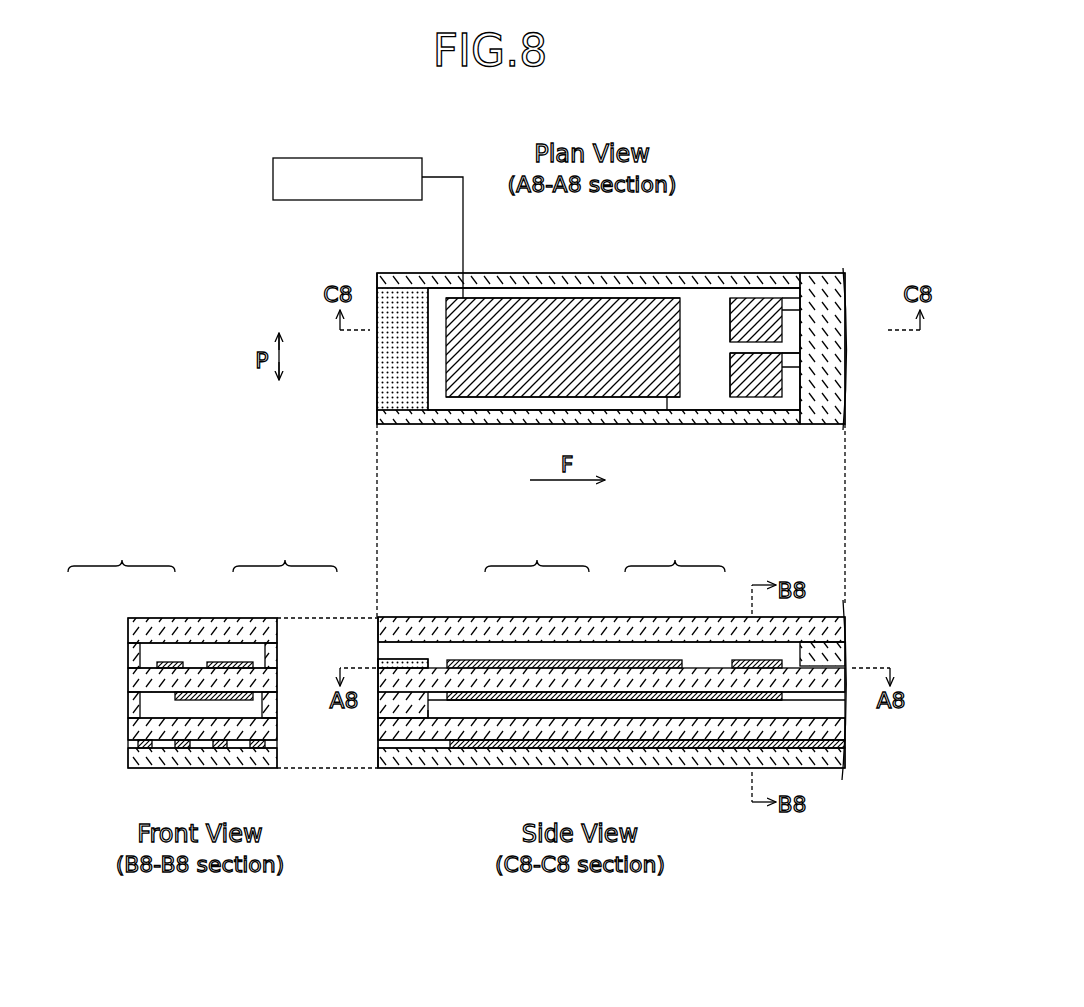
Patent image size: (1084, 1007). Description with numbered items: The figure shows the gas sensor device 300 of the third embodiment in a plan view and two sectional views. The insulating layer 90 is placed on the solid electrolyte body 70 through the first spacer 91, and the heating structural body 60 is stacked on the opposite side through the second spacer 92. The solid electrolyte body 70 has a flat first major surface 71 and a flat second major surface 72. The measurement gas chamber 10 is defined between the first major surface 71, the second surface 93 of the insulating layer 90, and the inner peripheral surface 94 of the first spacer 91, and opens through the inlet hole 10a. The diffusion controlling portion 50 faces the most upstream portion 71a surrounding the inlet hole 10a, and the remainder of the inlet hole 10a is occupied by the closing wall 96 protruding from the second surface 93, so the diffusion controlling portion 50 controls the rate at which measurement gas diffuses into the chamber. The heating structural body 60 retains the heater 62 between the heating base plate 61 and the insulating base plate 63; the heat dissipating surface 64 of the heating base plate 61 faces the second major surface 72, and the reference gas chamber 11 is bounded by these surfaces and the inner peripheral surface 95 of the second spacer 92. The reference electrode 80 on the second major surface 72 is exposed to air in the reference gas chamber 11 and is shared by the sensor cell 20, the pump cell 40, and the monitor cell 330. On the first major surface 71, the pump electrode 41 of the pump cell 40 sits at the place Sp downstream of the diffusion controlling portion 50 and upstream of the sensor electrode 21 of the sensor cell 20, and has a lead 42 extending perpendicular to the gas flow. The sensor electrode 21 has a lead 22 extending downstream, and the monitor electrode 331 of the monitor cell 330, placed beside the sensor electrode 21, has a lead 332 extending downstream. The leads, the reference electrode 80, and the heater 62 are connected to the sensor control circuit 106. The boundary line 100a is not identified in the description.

The sensor control circuit 106 is at (367, 158).
The gas sensor device 300 is at (302, 312).
The cover layer 100a is at (378, 276).
The diffusion controlling portion 50 is at (401, 292).
The pump electrode 41 is at (490, 298).
The place Sp is at (553, 297).
The inner peripheral surface 94 is at (600, 298).
The measurement gas chamber 10 is at (703, 292).
The sensor electrode 21 is at (750, 298).
The lead 22 is at (792, 300).
The first spacer 91 is at (823, 295).
The sensor cell 20 is at (790, 322).
The lead 332 is at (790, 362).
The first major surface 71 is at (718, 349).
The inlet hole 10a is at (378, 410).
The lead 42 is at (668, 405).
The monitor cell 330 is at (722, 380).
The monitor electrode 331 is at (762, 398).
The second surface 93 is at (433, 660).
The pump cell 40 is at (537, 553).
The closing wall 96 is at (405, 660).
The solid electrolyte body 70 is at (547, 660).
The reference electrode 80 is at (582, 660).
The insulating layer 90 is at (848, 628).
The heating base plate 61 is at (848, 735).
The heater 62 is at (833, 770).
The insulating base plate 63 is at (700, 748).
The second major surface 72 is at (626, 700).
The inner peripheral surface 95 is at (545, 700).
The heat dissipating surface 64 is at (482, 745).
The reference gas chamber 11 is at (445, 705).
The most upstream portion 71a is at (430, 696).
The second spacer 92 is at (412, 712).
The heating structural body 60 is at (376, 746).